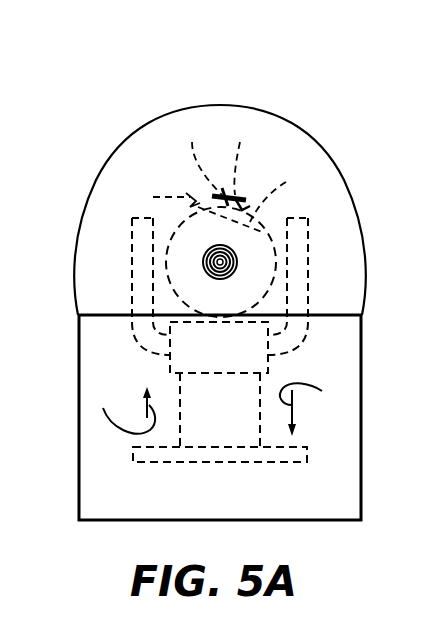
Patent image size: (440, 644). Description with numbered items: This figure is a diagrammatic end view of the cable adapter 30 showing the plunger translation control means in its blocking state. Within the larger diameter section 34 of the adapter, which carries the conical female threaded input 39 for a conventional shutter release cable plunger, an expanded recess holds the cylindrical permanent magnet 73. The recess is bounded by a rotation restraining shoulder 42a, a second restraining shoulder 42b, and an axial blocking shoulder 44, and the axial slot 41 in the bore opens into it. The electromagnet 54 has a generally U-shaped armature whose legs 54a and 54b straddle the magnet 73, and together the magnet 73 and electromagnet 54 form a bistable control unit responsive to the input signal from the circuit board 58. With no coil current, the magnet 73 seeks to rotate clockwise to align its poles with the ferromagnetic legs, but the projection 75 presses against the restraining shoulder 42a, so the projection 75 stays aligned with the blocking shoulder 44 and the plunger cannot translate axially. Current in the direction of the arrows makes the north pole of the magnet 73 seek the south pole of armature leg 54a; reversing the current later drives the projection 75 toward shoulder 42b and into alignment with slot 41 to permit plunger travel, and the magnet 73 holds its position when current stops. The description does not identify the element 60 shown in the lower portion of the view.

The cable adapter 30 is at (112, 135).
The larger diameter section 34 is at (292, 122).
The slot 41 is at (201, 154).
The projection 75 is at (251, 154).
The axial blocking shoulder 44 is at (245, 195).
The rotation restraining shoulder 42a is at (269, 197).
The restraining shoulder 42b is at (179, 193).
The conical female threaded input 39 is at (204, 266).
The permanent magnet 73 is at (265, 272).
The armature leg 54a is at (305, 304).
The armature leg 54b is at (132, 273).
The electromagnet 54 is at (220, 410).
The base housing 60 is at (362, 438).
The circuit board 58 is at (282, 463).